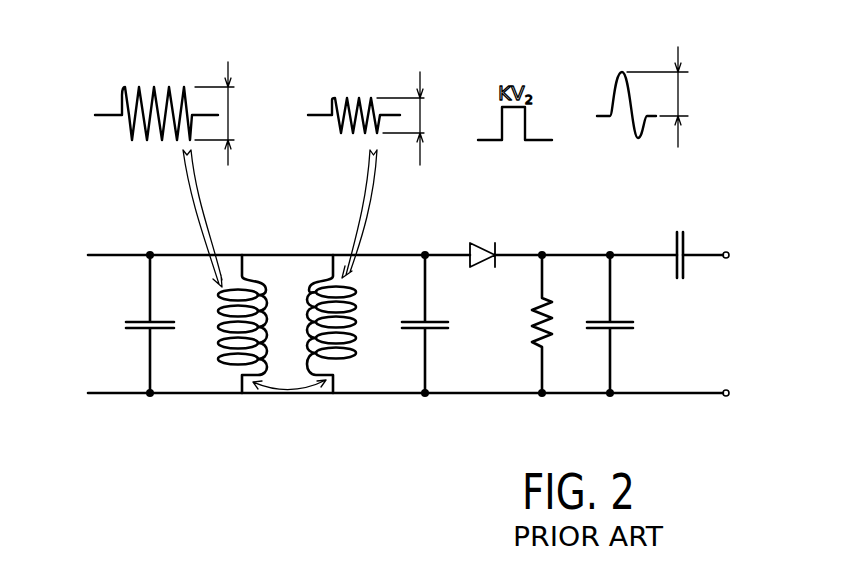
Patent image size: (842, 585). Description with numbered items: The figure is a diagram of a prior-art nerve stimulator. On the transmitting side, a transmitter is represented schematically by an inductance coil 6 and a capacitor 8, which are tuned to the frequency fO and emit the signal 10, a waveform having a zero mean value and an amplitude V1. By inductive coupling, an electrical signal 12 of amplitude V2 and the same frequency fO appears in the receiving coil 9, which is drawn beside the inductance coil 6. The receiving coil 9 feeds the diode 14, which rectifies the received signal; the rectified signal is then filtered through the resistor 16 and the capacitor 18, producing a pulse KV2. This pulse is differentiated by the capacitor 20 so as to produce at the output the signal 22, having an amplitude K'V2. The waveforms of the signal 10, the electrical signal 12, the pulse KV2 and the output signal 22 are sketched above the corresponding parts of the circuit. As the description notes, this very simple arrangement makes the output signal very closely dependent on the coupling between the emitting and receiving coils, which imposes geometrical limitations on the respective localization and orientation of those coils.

The inductance coil 6 is at (225, 363).
The capacitor 8 is at (140, 318).
The receiving coil 9 is at (345, 362).
The signal 10 is at (150, 88).
The electrical signal 12 is at (358, 98).
The diode 14 is at (470, 242).
The resistor 16 is at (543, 308).
The capacitor 18 is at (621, 332).
The capacitor 20 is at (688, 247).
The signal 22 is at (612, 82).